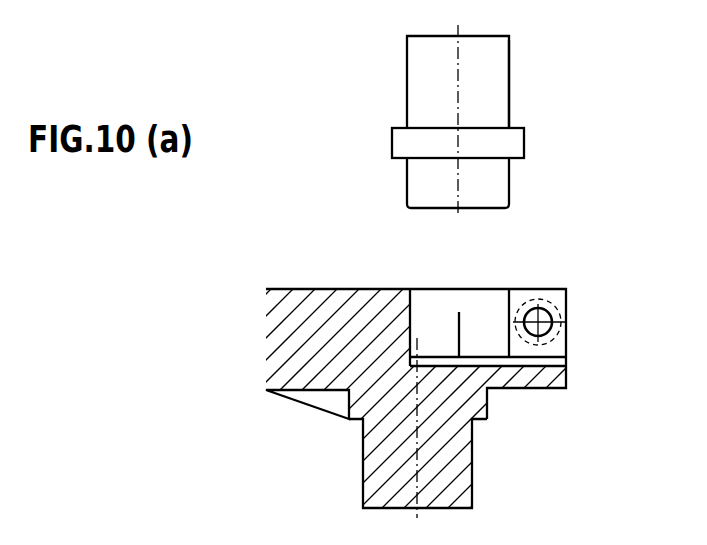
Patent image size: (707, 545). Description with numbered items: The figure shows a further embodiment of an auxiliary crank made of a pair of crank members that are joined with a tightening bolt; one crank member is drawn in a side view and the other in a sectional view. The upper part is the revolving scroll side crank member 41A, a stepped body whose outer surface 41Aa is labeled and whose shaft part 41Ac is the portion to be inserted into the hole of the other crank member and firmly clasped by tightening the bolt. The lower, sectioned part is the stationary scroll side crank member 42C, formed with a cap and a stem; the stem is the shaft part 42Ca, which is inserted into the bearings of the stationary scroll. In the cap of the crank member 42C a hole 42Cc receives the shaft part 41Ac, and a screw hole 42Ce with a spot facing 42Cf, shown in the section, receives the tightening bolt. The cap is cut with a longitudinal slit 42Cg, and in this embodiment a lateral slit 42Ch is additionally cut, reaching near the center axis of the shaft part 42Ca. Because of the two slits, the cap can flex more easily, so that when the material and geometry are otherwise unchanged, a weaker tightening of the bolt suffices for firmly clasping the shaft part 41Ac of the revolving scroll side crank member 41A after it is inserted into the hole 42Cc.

The revolving scroll side crank member 41A is at (493, 69).
The outer peripheral surface of engaging member 41Aa is at (509, 100).
The shaft part 41Ac is at (509, 170).
The crank member 42C is at (283, 340).
The shaft part 42Ca is at (472, 475).
The recess of holder block 42Cc is at (410, 312).
The screw hole 42Ce is at (566, 322).
The threaded portion 42Cf is at (556, 303).
The longitudinal slit 42Cg is at (440, 338).
The lateral slit 42Ch is at (557, 361).